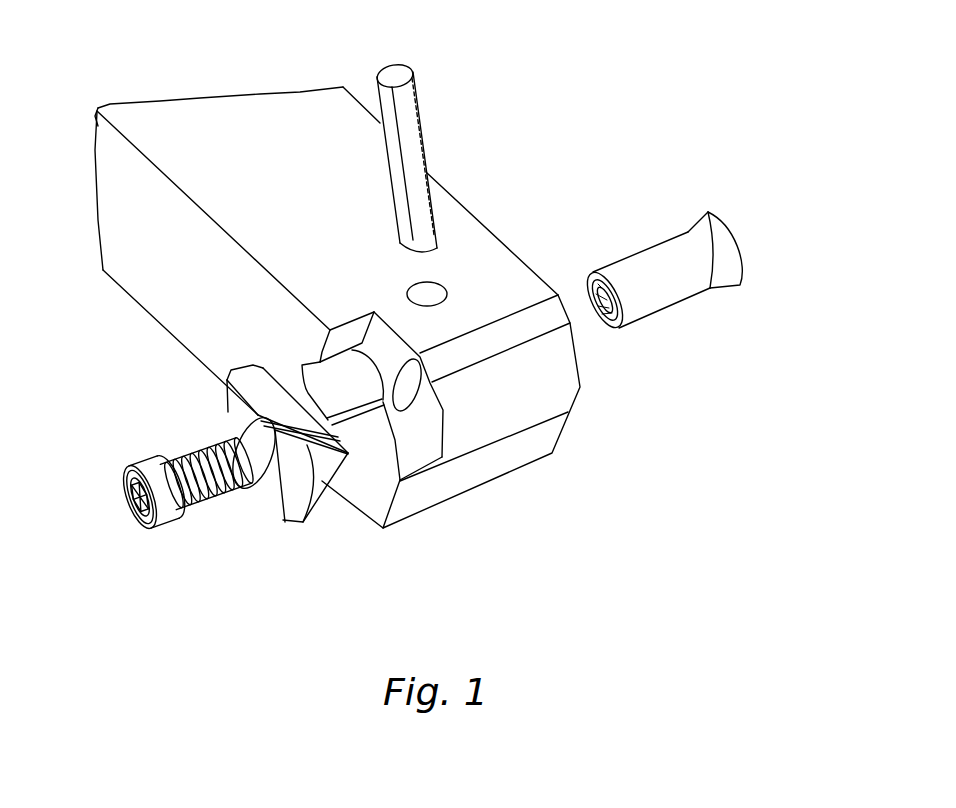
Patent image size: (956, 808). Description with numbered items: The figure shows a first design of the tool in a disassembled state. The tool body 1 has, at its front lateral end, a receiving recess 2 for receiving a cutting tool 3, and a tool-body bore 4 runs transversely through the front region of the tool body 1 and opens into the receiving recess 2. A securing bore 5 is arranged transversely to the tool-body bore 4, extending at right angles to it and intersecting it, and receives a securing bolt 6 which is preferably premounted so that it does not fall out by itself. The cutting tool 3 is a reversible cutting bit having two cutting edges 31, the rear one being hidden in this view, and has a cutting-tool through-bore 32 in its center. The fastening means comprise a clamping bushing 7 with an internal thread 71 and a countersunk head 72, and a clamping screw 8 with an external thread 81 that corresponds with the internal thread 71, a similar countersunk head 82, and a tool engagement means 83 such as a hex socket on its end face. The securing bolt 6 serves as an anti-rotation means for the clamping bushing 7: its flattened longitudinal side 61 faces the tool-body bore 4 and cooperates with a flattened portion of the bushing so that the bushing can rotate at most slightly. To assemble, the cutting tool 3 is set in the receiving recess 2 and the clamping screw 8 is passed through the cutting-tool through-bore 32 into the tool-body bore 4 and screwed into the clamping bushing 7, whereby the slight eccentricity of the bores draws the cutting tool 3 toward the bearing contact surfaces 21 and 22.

The tool body 1 is at (135, 300).
The receiving recess 2 is at (308, 460).
The bearing contact surface 21 is at (407, 455).
The bearing contact surface 22 is at (343, 337).
The cutting tool 3 is at (247, 507).
The cutting edge 31 is at (303, 520).
The cutting-tool through-bore 32 is at (265, 485).
The tool-body bore 4 is at (433, 397).
The securing bore 5 is at (430, 293).
The securing bolt 6 is at (449, 137).
The flattened longitudinal side 61 is at (408, 122).
The clamping bushing 7 is at (705, 277).
The internal thread 71 is at (604, 328).
The countersunk head 72 is at (727, 272).
The clamping screw 8 is at (135, 546).
The external thread 81 is at (197, 510).
The countersunk head 82 is at (155, 530).
The tool engagement means 83 is at (143, 502).